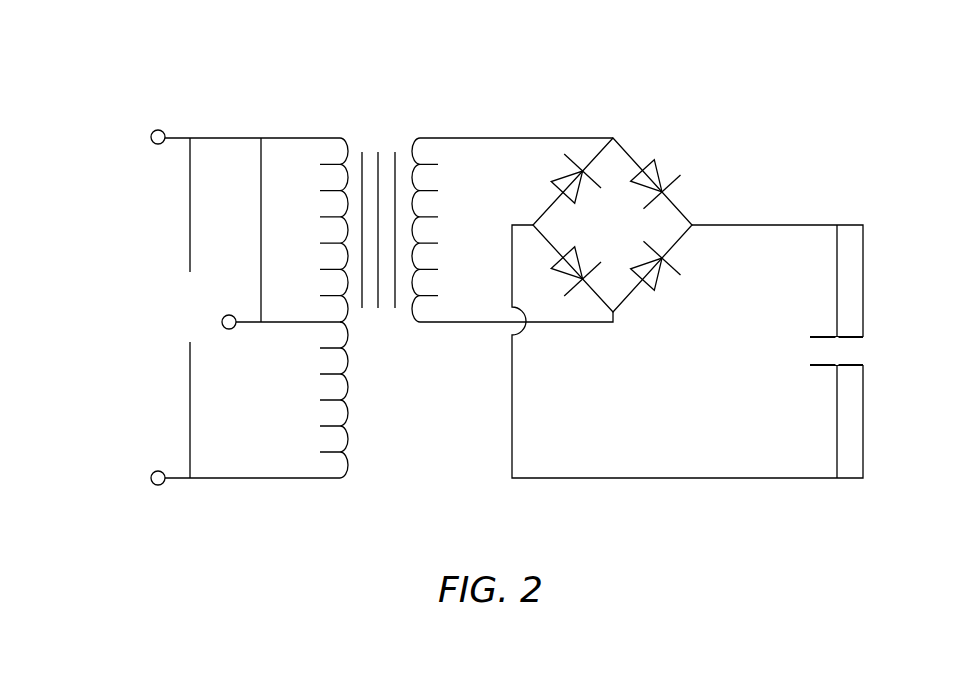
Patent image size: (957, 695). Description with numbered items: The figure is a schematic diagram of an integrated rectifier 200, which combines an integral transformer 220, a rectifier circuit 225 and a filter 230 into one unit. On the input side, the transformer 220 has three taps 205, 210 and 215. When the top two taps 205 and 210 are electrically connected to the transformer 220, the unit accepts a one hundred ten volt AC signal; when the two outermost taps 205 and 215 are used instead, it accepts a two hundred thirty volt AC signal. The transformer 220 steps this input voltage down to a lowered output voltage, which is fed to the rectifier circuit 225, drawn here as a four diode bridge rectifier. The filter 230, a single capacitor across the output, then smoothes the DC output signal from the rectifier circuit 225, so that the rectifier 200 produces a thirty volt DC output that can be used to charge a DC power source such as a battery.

The integrated rectifier 200 is at (475, 279).
The tap 205 is at (152, 129).
The tap 210 is at (234, 329).
The tap 215 is at (163, 486).
The transformer 220 is at (380, 323).
The rectifier circuit 225 is at (622, 304).
The filter 230 is at (826, 336).